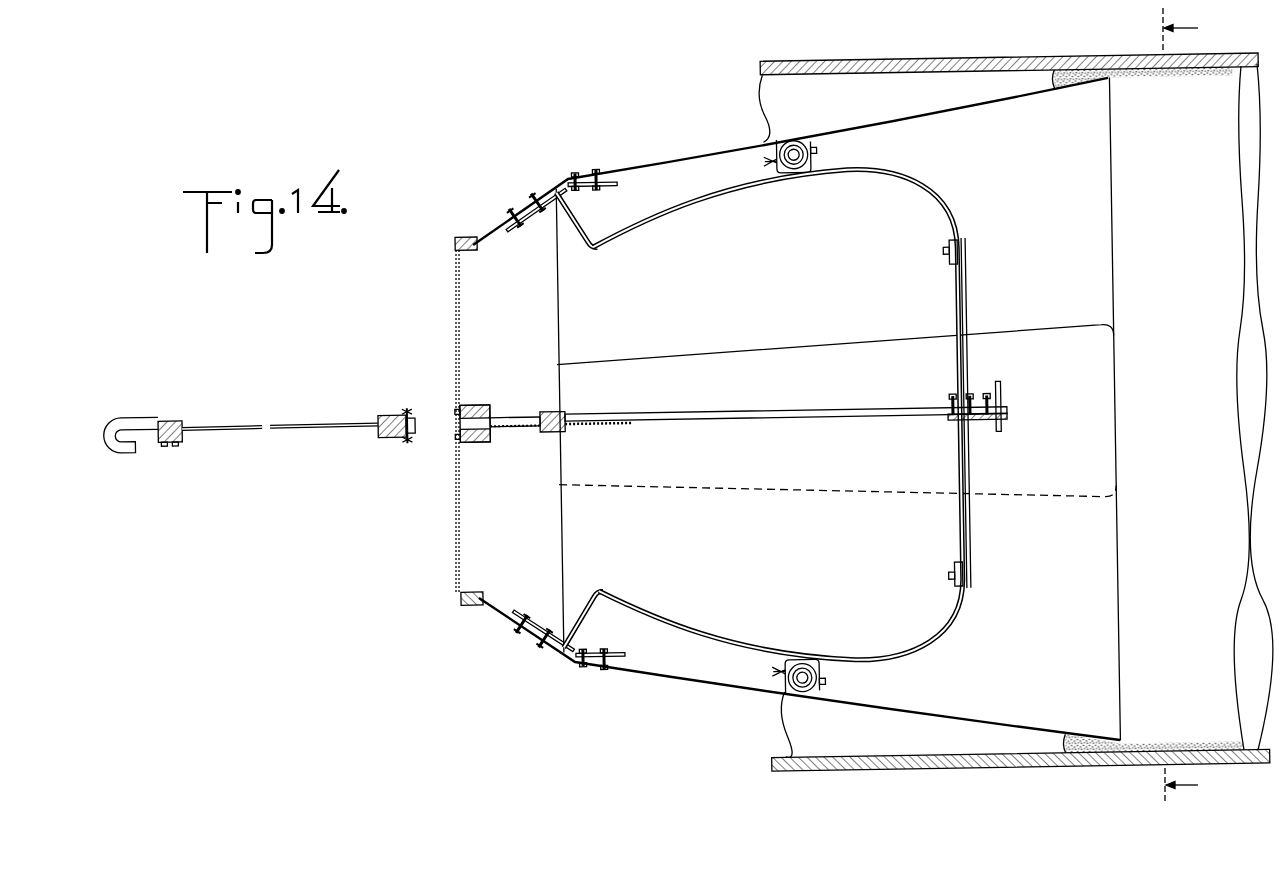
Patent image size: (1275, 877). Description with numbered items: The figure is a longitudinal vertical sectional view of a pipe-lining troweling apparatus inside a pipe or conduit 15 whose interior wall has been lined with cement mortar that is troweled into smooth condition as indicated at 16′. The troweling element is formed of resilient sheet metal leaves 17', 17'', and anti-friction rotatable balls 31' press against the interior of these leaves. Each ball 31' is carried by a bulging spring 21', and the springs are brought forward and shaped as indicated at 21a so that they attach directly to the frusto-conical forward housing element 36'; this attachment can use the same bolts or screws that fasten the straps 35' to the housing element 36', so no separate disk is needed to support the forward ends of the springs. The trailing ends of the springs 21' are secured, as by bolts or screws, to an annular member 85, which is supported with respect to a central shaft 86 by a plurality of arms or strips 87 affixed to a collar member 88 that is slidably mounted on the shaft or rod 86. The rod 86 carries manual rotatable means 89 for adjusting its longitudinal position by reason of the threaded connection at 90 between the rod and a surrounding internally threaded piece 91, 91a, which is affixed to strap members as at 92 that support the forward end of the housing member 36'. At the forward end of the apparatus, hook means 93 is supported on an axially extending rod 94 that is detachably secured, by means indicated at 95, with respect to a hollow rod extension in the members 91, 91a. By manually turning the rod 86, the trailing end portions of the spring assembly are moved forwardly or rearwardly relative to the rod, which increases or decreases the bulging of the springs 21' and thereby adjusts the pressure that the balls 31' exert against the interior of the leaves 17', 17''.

The pipe or conduit 15 is at (912, 63).
The troweled cement mortar lining 16′ is at (1074, 72).
The leaf of the troweling element 17' is at (791, 161).
The leaf of the troweling element 17'' is at (799, 668).
The anti-friction rotatable ball 31' is at (774, 413).
The frusto-conical forward housing element 36' is at (518, 407).
The strap 35' is at (609, 419).
The shaped forward end of spring 21a is at (593, 248).
The spring 21' is at (778, 416).
The annular member 85 is at (957, 259).
The central shaft 86 is at (811, 406).
The arm or strip 87 is at (968, 355).
The collar member 88 is at (975, 421).
The manual rotatable means 89 is at (1003, 401).
The threaded connection 90 is at (583, 424).
The internally threaded piece 91 is at (561, 413).
The internally threaded piece 91a is at (481, 404).
The strap member 92 is at (455, 326).
The hook means 93 is at (125, 420).
The axially extending rod 94 is at (280, 423).
The detachable securing means 95 is at (385, 438).